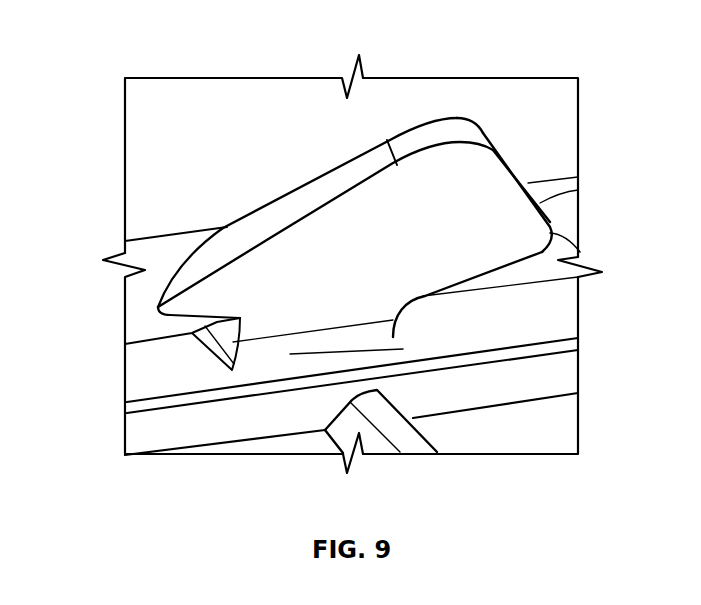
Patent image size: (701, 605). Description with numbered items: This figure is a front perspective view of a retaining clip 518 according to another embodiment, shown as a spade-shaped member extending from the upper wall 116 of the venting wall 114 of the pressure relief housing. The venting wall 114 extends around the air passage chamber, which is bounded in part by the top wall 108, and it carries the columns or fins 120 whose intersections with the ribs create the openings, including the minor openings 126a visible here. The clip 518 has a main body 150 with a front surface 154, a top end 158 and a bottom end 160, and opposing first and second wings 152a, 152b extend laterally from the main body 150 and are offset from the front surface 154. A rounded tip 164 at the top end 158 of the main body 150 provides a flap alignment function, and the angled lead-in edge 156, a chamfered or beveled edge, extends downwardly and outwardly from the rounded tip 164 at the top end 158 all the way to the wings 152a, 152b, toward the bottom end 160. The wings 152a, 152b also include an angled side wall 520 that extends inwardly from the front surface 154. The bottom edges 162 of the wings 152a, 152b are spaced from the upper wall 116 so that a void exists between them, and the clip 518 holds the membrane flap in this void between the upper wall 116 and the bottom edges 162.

The top wall 108 is at (152, 157).
The venting wall 114 is at (153, 387).
The upper wall 116 is at (137, 380).
The fin 120 is at (410, 445).
The minor opening 126a is at (535, 436).
The main body 150 is at (267, 277).
The first wing 152a is at (157, 302).
The second wing 152b is at (614, 259).
The front surface 154 is at (413, 270).
The angled lead-in edge 156 is at (277, 213).
The top end 158 is at (463, 155).
The bottom end 160 is at (333, 283).
The bottom edge 162 is at (172, 318).
The rounded tip 164 is at (450, 122).
The clip 518 is at (337, 177).
The angled side wall 520 is at (160, 302).